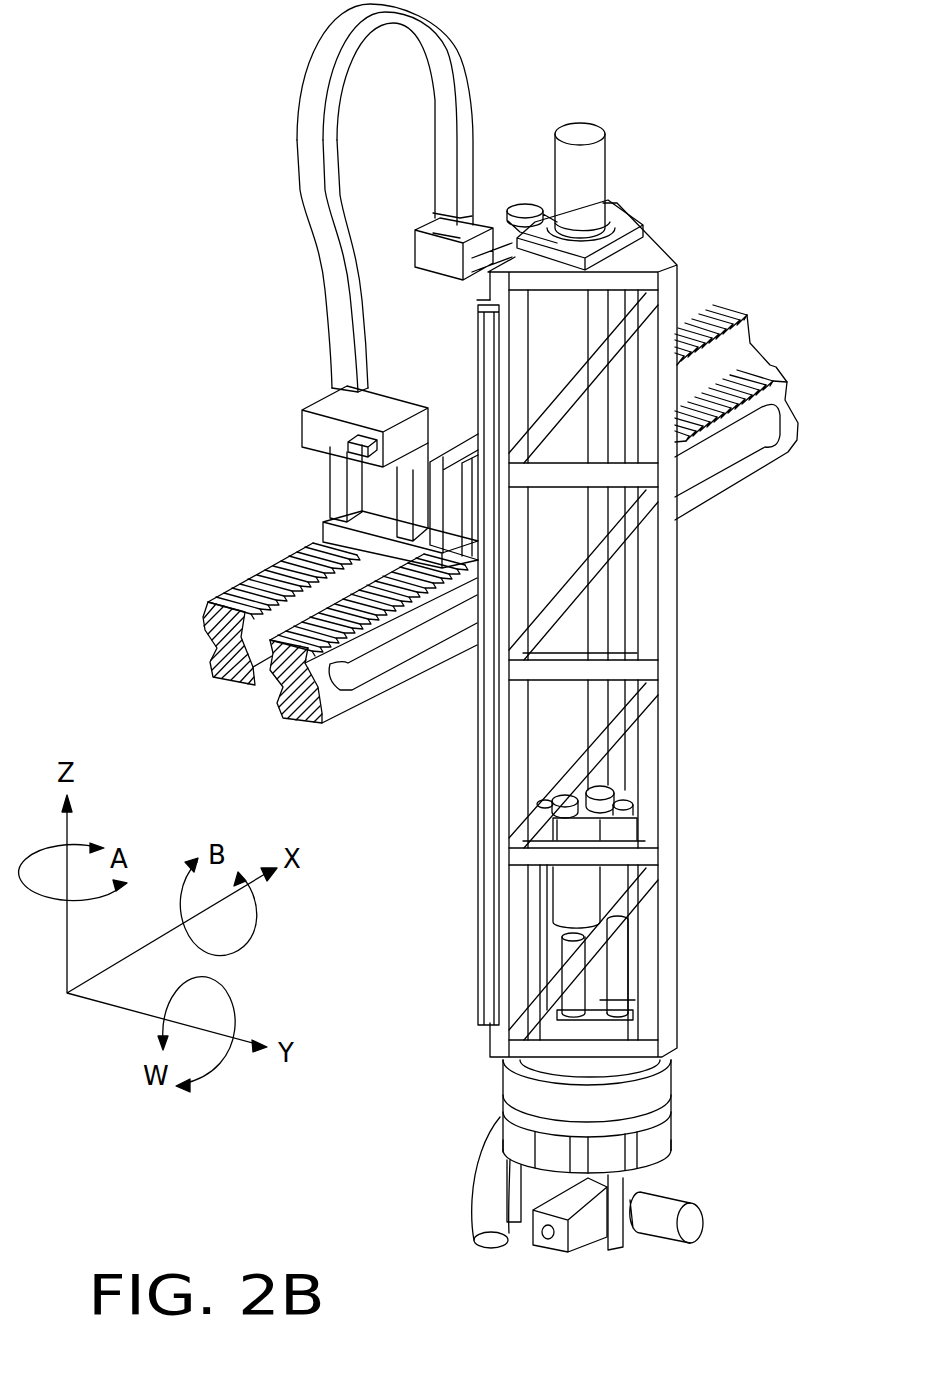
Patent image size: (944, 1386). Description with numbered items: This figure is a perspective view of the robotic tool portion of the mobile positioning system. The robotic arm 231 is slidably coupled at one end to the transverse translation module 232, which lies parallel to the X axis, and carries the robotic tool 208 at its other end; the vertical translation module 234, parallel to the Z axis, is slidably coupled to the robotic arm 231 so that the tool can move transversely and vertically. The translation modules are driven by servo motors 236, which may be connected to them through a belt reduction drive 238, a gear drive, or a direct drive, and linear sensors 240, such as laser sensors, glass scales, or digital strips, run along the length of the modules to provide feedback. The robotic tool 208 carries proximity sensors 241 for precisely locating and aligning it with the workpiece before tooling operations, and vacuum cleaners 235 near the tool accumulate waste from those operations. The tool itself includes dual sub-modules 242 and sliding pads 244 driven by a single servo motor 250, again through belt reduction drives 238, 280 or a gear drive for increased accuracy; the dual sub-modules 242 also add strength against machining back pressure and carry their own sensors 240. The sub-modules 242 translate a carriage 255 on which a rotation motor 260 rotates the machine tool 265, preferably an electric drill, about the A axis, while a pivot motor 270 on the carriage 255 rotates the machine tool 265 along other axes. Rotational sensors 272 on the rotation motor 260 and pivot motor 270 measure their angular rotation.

The robotic arm 231 is at (704, 230).
The servo motor 236 is at (597, 173).
The belt reduction drive 238 is at (524, 206).
The linear sensor 240 is at (481, 333).
The sliding pad 244 is at (472, 507).
The transverse translation module 232 is at (282, 698).
The belt reduction drive 280 is at (608, 796).
The vertical translation module 234 is at (627, 833).
The servo motor 250 is at (571, 897).
The rotation motor 260 is at (567, 949).
The dual sub-modules 242 is at (637, 942).
The carriage 255 is at (615, 1012).
The proximity sensor 241 is at (580, 1150).
The robotic tool 208 is at (444, 1142).
The rotational sensor 272 is at (647, 1196).
The vacuum cleaner 235 is at (478, 1208).
The pivot motor 270 is at (663, 1230).
The machine tool 265 is at (550, 1248).